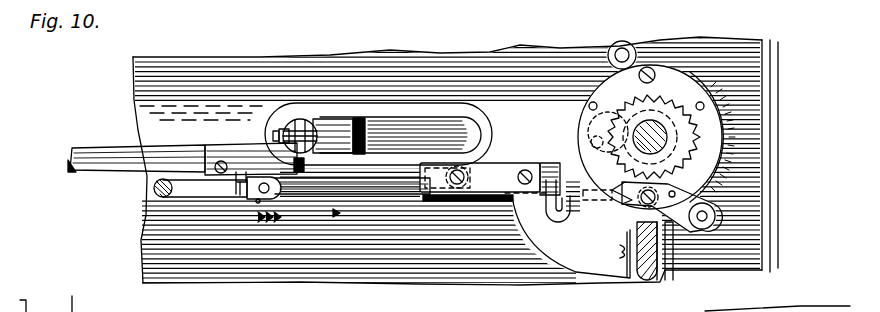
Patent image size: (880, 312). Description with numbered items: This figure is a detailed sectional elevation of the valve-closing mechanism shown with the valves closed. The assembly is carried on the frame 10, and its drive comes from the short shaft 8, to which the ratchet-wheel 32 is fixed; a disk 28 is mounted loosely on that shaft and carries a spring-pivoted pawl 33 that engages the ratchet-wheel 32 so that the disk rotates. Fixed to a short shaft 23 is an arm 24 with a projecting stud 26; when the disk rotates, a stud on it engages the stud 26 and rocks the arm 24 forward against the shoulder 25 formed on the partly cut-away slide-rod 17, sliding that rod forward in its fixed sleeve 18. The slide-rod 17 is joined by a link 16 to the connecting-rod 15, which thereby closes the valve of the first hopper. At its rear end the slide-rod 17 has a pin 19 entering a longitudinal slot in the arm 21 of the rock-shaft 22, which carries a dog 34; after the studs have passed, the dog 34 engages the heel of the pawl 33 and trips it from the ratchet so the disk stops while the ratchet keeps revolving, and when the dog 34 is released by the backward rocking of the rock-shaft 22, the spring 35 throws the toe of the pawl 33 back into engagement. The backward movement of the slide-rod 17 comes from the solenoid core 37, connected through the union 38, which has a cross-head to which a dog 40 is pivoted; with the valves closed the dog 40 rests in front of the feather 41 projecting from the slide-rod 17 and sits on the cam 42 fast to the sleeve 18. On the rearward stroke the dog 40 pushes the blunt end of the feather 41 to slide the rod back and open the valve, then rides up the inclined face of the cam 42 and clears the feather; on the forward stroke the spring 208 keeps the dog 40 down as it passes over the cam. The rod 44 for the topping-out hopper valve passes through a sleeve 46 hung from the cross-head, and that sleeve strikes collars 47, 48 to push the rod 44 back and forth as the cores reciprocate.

The frame 10 is at (455, 142).
The short shaft 8 is at (656, 133).
The connecting-rod 15 is at (157, 200).
The link 16 is at (258, 190).
The slide-rod 17 is at (297, 200).
The fixed sleeve 18 is at (478, 205).
The pin 19 is at (726, 115).
The arm 21 is at (600, 237).
The rock-shaft 22 is at (708, 224).
The short shaft 23 is at (647, 70).
The arm 24 is at (610, 40).
The shoulder 25 is at (552, 162).
The stud 26 is at (612, 95).
The disk 28 is at (658, 107).
The ratchet-wheel 32 is at (687, 147).
The pawl 33 is at (633, 197).
The dog 34 is at (690, 210).
The spring 35 is at (648, 204).
The core 37 is at (405, 135).
The union 38 is at (333, 137).
The dog 40 is at (298, 125).
The feather 41 is at (345, 198).
The cam 42 is at (403, 186).
The rod 44 is at (117, 150).
The sleeve 46 is at (248, 152).
The collar 47 is at (209, 148).
The collar 48 is at (435, 162).
The spring 208 is at (277, 133).